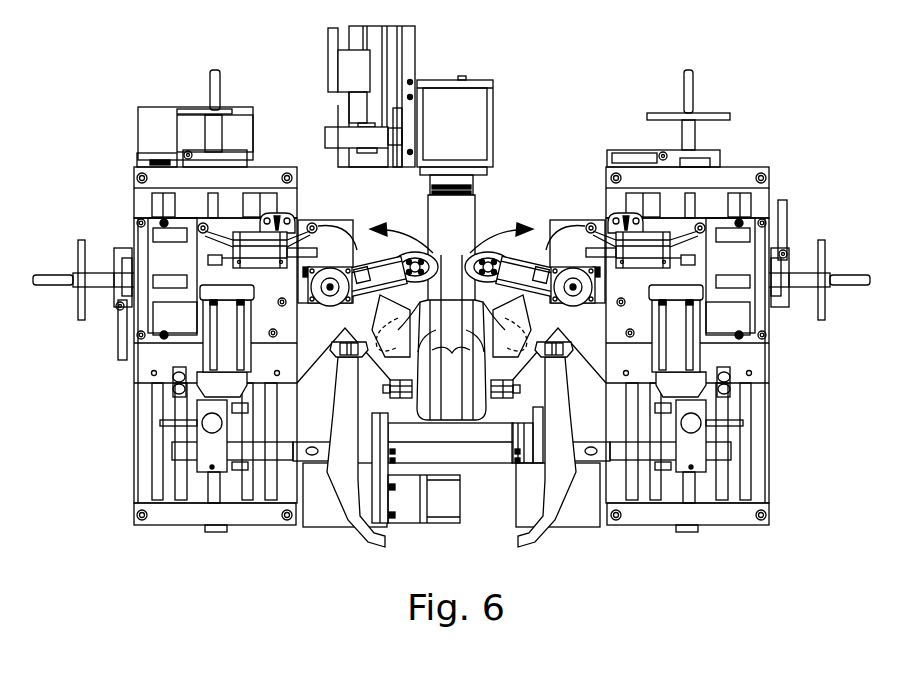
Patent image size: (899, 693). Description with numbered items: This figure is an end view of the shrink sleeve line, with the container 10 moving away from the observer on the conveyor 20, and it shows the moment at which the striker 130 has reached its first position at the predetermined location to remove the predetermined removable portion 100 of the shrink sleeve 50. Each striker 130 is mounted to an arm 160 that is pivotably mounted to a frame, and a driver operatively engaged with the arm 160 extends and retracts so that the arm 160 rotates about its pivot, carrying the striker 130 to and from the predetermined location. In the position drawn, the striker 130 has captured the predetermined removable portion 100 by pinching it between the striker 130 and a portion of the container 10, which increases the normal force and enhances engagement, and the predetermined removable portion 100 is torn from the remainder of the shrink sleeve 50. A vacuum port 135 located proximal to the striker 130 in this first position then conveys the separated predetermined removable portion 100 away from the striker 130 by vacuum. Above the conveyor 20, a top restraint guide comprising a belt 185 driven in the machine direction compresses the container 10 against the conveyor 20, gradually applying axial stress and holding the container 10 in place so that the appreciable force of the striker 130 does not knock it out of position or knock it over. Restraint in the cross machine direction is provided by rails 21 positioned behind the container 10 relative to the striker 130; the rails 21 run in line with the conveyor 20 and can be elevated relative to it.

The container 10 is at (463, 212).
The conveyor 20 is at (502, 417).
The rail 21 is at (398, 390).
The shrink sleeve 50 is at (451, 360).
The predetermined removable portion 100 is at (451, 337).
The striker 130 is at (414, 245).
The vacuum port 135 is at (451, 297).
The arm 160 is at (368, 247).
The belt 185 is at (449, 173).